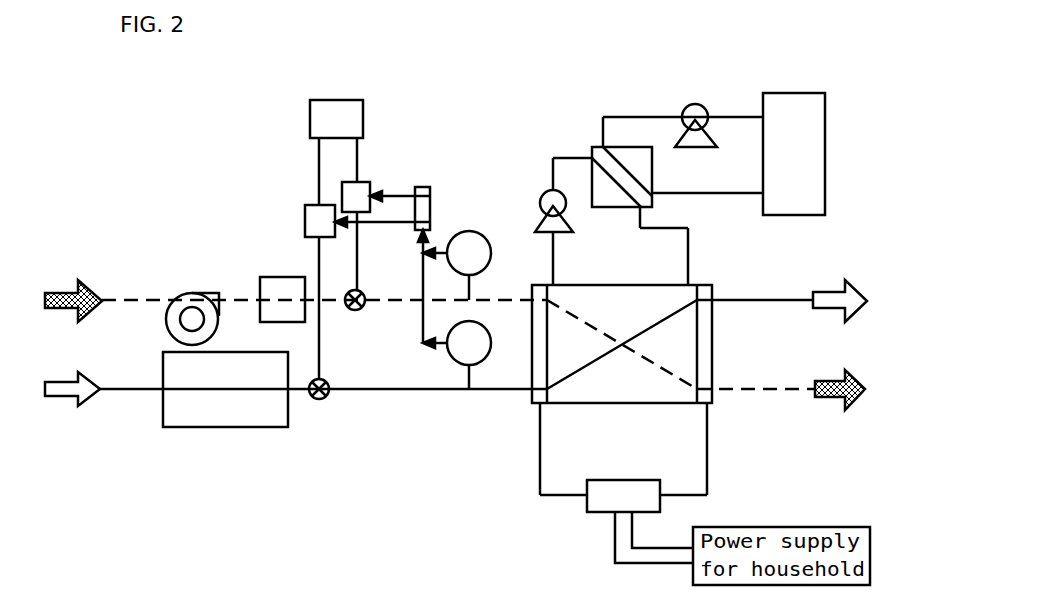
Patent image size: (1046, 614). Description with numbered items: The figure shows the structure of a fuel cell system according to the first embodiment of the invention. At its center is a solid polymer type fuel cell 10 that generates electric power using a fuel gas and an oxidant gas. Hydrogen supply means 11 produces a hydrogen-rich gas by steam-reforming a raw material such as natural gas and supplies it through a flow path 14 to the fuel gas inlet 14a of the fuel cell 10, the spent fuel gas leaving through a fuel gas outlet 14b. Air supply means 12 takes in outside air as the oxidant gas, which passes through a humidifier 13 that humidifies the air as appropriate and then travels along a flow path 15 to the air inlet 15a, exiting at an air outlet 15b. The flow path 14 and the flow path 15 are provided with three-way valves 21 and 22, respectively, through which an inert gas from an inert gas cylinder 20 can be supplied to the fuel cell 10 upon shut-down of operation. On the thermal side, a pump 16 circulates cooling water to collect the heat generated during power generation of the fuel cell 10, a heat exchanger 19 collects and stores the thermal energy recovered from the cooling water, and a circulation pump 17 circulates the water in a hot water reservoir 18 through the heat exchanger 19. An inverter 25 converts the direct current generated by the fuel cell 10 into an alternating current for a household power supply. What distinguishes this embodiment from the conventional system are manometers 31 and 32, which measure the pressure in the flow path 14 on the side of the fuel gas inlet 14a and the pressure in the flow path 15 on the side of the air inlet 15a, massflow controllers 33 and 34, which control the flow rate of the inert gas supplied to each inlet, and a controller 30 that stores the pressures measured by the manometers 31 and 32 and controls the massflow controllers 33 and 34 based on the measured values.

The fuel cell 10 is at (602, 319).
The hydrogen supply means 11 is at (225, 420).
The air supply means 12 is at (202, 293).
The humidifier 13 is at (278, 278).
The flow path 14 is at (127, 392).
The fuel gas inlet 14a is at (530, 389).
The fuel gas outlet 14b is at (712, 296).
The flow path 15 is at (123, 295).
The air inlet 15a is at (530, 300).
The air outlet 15b is at (712, 392).
The pump 16 is at (562, 205).
The circulation pump 17 is at (695, 103).
The hot water reservoir 18 is at (817, 103).
The heat exchanger 19 is at (597, 147).
The inert gas cylinder 20 is at (335, 105).
The three-way valve 21 is at (328, 378).
The three-way valve 22 is at (363, 294).
The inverter 25 is at (587, 512).
The controller 30 is at (422, 187).
The manometer 31 is at (451, 361).
The manometer 32 is at (470, 230).
The massflow controller 33 is at (305, 207).
The massflow controller 34 is at (368, 185).